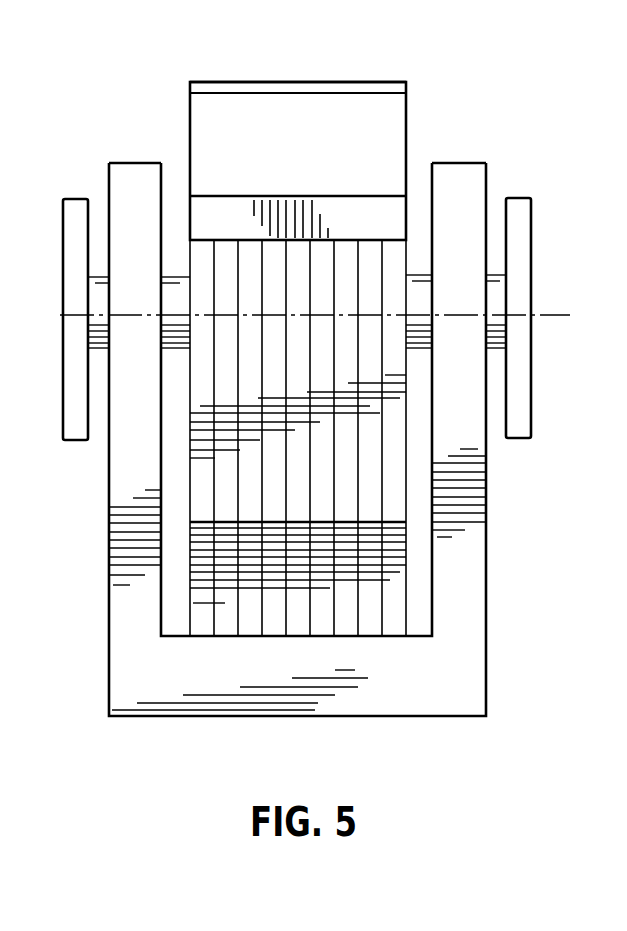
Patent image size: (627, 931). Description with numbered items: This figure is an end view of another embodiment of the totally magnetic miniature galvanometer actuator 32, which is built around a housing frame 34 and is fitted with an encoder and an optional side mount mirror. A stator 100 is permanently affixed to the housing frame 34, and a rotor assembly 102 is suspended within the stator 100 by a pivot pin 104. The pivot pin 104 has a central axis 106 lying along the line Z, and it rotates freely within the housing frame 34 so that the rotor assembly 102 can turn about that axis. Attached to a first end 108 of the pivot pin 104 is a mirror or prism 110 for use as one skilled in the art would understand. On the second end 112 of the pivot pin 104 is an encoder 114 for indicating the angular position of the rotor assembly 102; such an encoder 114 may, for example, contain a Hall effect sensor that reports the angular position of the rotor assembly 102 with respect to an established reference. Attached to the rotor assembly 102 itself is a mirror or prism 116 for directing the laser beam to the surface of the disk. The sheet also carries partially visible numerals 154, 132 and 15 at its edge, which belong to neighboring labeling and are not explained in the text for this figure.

The miniature galvanometer actuator 32 is at (100, 690).
The housing frame 34 is at (473, 683).
The stator 100 is at (408, 588).
The rotor assembly 102 is at (190, 133).
The pivot pin 104 is at (416, 275).
The central axis 106 is at (553, 314).
The first end 108 is at (496, 275).
The mirror or prism 110 is at (519, 240).
The second end 112 is at (99, 275).
The encoder 114 is at (77, 443).
The mirror or prism 116 is at (332, 81).
The connector 154 is at (626, 480).
The electrode 132 is at (626, 573).
The frame member 15 is at (616, 658).
The line Z is at (78, 318).